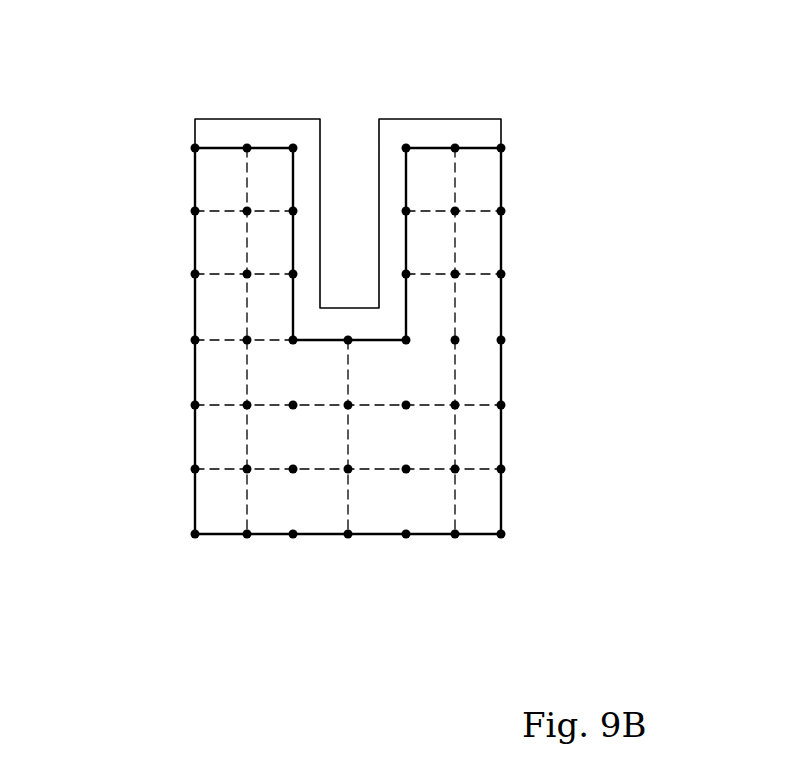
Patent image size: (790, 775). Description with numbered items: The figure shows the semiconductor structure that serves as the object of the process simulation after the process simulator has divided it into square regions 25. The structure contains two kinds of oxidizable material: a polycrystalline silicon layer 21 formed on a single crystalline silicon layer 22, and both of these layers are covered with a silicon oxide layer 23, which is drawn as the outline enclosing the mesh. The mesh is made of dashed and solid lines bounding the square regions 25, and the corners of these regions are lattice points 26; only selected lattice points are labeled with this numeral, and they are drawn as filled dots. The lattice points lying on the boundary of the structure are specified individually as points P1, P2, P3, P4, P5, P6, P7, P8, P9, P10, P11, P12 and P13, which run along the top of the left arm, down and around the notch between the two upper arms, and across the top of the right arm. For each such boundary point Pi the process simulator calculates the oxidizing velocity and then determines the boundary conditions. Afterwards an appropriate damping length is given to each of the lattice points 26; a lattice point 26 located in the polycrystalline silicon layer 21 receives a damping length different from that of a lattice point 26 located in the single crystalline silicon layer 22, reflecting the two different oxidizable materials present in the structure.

The polycrystalline silicon layer 21 is at (508, 246).
The single crystalline silicon layer 22 is at (505, 388).
The silicon oxide layer 23 is at (398, 127).
The square regions 25 is at (240, 205).
The lattice points 26 is at (290, 213).
The lattice point on the boundary P1 is at (195, 146).
The lattice point on the boundary P2 is at (242, 143).
The lattice point on the boundary P3 is at (283, 143).
The lattice point on the boundary P4 is at (295, 210).
The lattice point on the boundary P5 is at (287, 258).
The lattice point on the boundary P6 is at (253, 333).
The lattice point on the boundary P7 is at (348, 338).
The lattice point on the boundary P8 is at (406, 340).
The lattice point on the boundary P9 is at (405, 262).
The lattice point on the boundary P10 is at (405, 205).
The lattice point on the boundary P11 is at (403, 141).
The lattice point on the boundary P12 is at (457, 143).
The lattice point on the boundary P13 is at (492, 145).